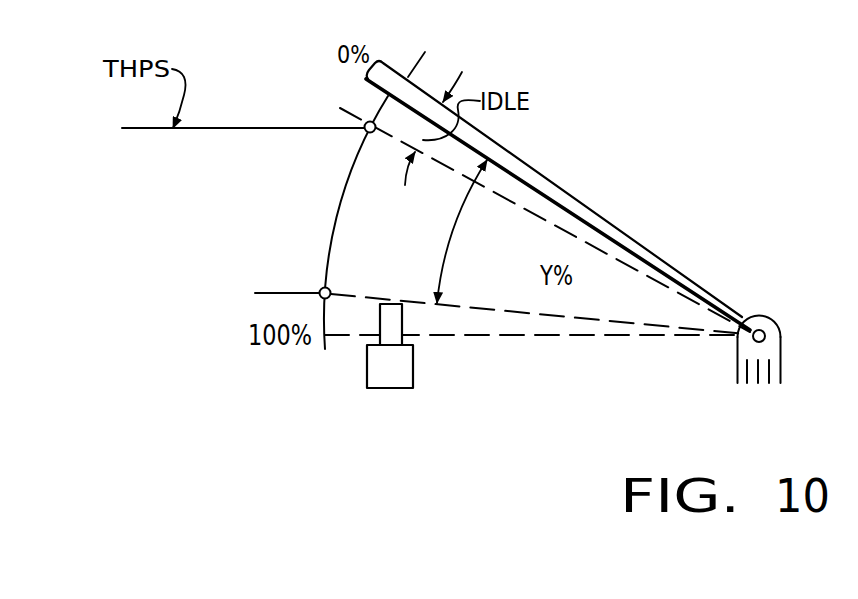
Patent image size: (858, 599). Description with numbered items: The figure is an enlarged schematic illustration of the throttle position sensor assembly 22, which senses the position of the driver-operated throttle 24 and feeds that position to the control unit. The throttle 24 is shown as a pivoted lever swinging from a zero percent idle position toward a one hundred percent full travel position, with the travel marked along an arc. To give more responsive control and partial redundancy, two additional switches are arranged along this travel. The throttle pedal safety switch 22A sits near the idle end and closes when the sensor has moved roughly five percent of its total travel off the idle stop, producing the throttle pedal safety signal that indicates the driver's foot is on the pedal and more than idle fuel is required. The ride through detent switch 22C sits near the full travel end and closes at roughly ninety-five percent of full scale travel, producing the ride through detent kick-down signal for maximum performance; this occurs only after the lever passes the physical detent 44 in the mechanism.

The throttle position sensor assembly 22 is at (563, 143).
The driver-operated throttle 24 is at (612, 239).
The throttle pedal safety switch 22A is at (332, 128).
The ride through detent switch 22C is at (300, 292).
The physical detent 44 is at (417, 362).